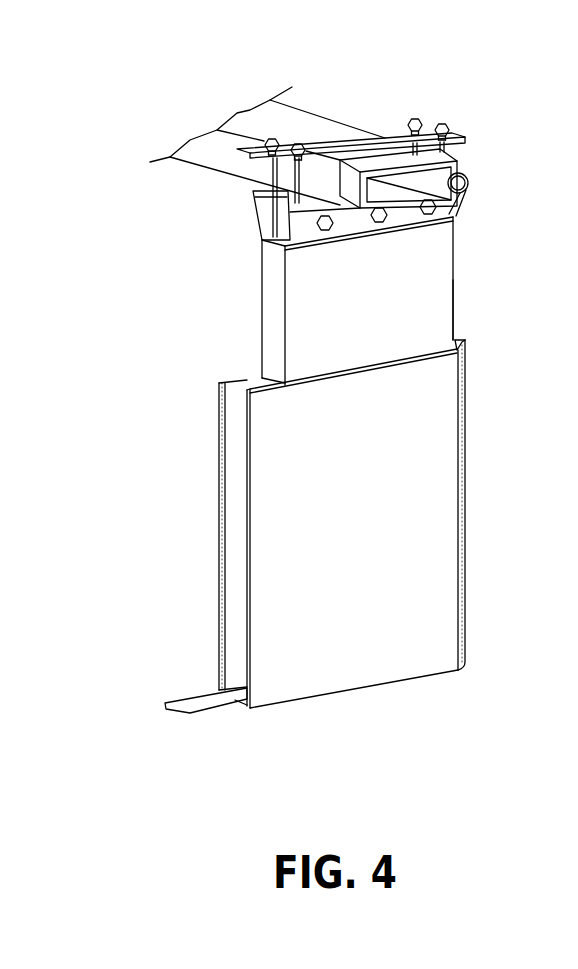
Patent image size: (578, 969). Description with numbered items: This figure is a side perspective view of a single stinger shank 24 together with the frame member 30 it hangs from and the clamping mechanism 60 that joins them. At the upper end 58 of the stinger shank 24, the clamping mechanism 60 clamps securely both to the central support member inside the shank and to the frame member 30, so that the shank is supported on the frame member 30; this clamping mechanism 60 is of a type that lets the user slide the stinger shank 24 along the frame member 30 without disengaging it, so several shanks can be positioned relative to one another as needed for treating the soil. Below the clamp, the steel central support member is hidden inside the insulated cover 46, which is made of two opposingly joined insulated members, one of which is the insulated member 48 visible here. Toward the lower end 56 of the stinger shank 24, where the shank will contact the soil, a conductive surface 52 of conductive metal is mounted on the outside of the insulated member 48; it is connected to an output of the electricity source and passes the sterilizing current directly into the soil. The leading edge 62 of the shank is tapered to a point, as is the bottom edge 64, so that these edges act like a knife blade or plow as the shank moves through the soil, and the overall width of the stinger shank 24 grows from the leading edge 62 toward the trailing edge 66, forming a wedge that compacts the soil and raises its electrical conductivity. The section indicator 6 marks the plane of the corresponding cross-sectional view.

The stinger shank 24 is at (193, 307).
The frame member 30 is at (233, 150).
The clamping mechanism 60 is at (368, 132).
The upper end 58 is at (480, 200).
The insulated cover 46 is at (429, 264).
The insulated member 48 is at (438, 323).
The conductive surface 52 is at (442, 530).
The leading edge 62 is at (480, 589).
The bottom edge 64 is at (387, 685).
The trailing edge 66 is at (206, 572).
The section line 6 is at (337, 517).
The lower end 56 is at (234, 724).